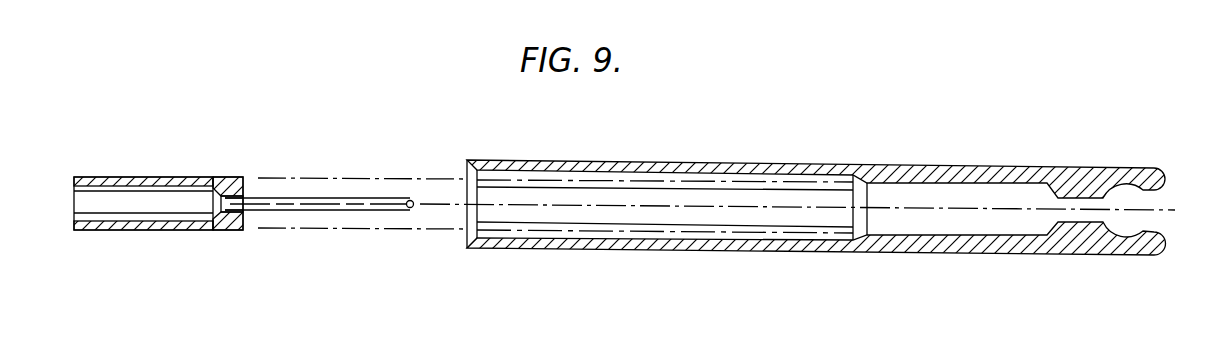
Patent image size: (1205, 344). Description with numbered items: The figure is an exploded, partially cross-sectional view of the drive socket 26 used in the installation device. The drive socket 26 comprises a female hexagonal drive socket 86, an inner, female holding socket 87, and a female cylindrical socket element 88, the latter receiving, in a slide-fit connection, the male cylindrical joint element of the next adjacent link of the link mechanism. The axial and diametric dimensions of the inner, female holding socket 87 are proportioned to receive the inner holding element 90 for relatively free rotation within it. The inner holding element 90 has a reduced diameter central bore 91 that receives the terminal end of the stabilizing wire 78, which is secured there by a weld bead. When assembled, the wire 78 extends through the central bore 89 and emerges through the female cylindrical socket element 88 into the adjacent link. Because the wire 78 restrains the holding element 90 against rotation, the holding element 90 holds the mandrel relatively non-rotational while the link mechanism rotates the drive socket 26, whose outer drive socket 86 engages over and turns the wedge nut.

The drive socket 26 is at (816, 202).
The stabilizing wire 78 is at (308, 211).
The female hexagonal drive socket 86 is at (742, 168).
The inner, female holding socket 87 is at (940, 188).
The female cylindrical socket element 88 is at (1140, 168).
The central bore 89 is at (1080, 226).
The inner holding element 90 is at (160, 177).
The reduced diameter central bore 91 is at (246, 195).